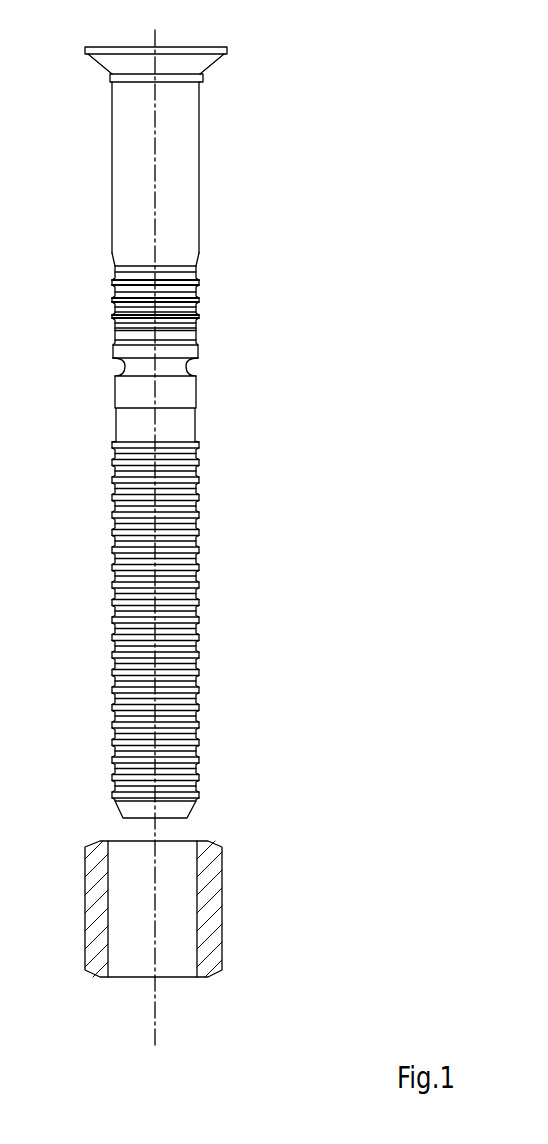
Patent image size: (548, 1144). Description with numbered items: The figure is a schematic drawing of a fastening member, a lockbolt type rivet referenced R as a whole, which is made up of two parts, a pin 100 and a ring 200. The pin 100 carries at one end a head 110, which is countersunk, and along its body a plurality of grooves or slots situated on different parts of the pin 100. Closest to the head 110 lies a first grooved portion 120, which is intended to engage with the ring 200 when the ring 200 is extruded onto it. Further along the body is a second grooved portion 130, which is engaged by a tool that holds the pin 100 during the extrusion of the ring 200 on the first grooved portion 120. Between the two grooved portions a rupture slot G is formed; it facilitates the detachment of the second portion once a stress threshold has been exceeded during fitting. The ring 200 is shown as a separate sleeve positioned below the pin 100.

The pin 100 is at (212, 414).
The head 110 is at (256, 48).
The first grooved portion 120 is at (221, 320).
The second grooved portion 130 is at (216, 657).
The ring 200 is at (243, 908).
The rupture slot G is at (107, 368).
The lockbolt rivet R is at (408, 544).